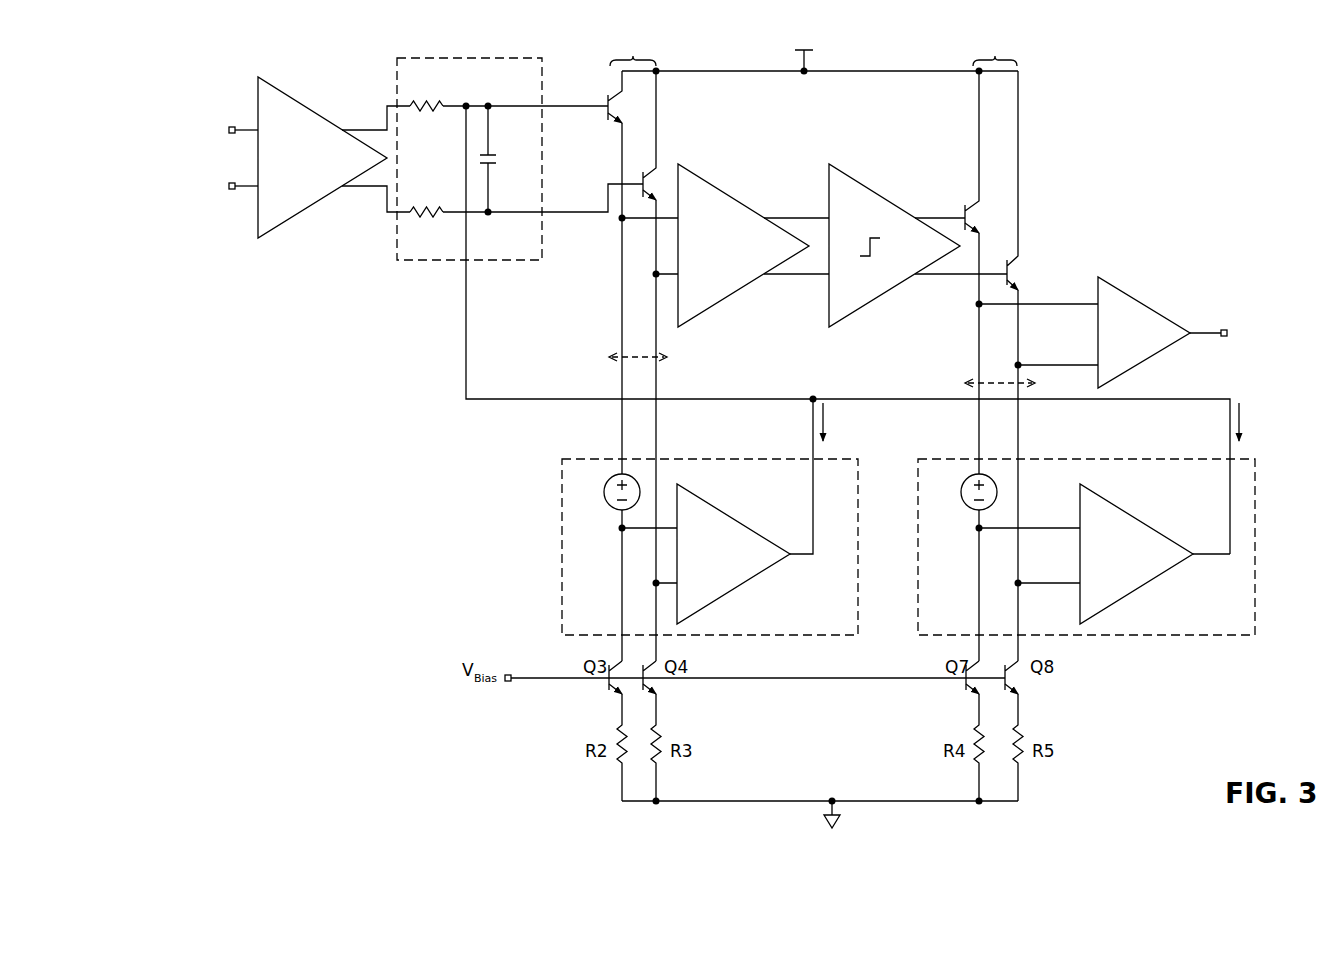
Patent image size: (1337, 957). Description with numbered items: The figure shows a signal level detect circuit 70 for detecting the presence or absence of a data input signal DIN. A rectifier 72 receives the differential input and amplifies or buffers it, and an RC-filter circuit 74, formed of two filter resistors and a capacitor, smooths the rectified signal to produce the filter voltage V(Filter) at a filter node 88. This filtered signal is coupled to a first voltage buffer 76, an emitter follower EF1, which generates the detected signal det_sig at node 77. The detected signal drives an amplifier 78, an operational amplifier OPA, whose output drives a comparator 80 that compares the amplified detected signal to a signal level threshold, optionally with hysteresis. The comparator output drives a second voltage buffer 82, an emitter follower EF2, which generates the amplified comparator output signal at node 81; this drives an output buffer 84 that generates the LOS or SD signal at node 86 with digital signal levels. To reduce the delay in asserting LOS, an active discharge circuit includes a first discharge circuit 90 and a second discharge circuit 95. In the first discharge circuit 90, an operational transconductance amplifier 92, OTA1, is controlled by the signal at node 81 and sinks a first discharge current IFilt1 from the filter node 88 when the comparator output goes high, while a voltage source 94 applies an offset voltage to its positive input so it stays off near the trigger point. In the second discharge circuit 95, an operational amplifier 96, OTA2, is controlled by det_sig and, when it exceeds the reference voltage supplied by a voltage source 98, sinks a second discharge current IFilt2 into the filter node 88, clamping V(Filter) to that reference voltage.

The signal level detect circuit 70 is at (1136, 35).
The rectifier 72 is at (323, 116).
The RC-filter circuit 74 is at (503, 58).
The first voltage buffer 76 is at (606, 336).
The detected signal node 77 is at (670, 357).
The amplifier 78 is at (741, 204).
The comparator 80 is at (892, 204).
The amplified comparator output signal node 81 is at (964, 383).
The second voltage buffer 82 is at (1007, 336).
The output buffer 84 is at (1142, 304).
The LOS or SD signal node 86 is at (1204, 330).
The filter node 88 is at (467, 311).
The first discharge circuit 90 is at (962, 459).
The operational transconductance amplifier 92 is at (1133, 517).
The voltage source 94 is at (969, 507).
The second discharge circuit 95 is at (600, 459).
The operational amplifier 96 is at (730, 517).
The voltage source 98 is at (610, 507).